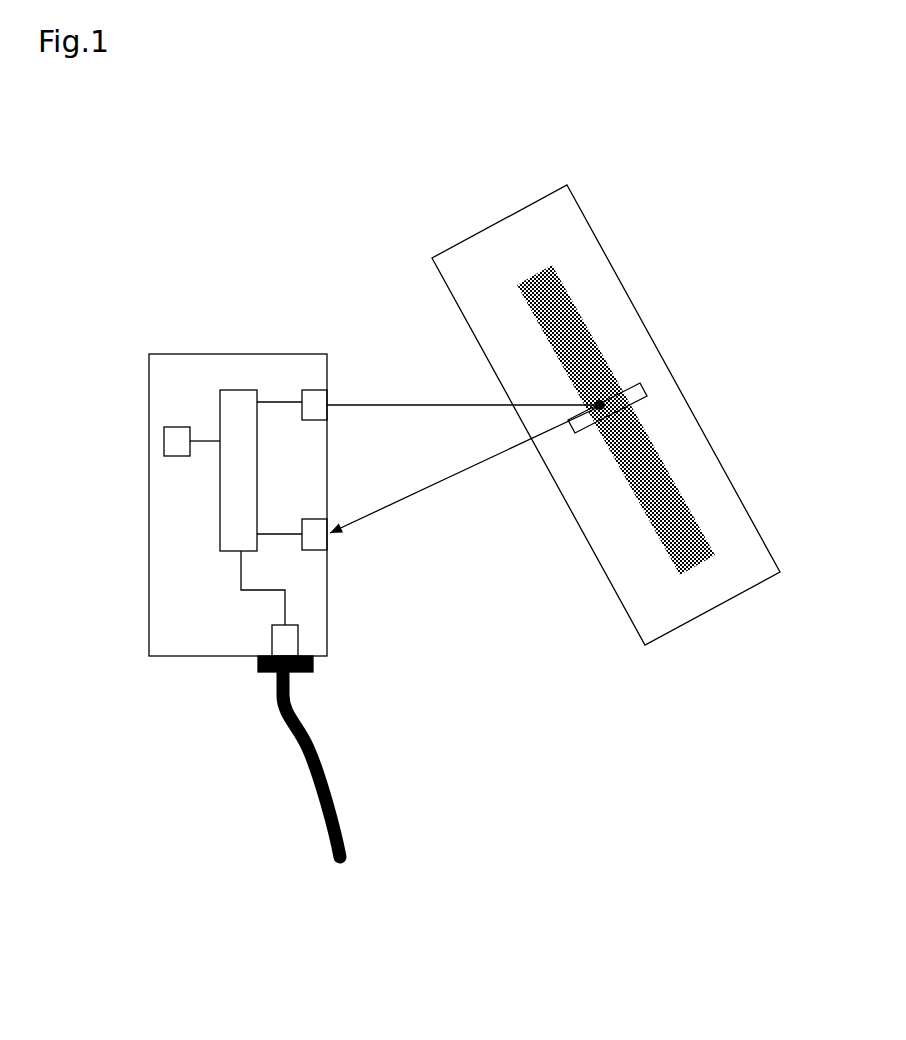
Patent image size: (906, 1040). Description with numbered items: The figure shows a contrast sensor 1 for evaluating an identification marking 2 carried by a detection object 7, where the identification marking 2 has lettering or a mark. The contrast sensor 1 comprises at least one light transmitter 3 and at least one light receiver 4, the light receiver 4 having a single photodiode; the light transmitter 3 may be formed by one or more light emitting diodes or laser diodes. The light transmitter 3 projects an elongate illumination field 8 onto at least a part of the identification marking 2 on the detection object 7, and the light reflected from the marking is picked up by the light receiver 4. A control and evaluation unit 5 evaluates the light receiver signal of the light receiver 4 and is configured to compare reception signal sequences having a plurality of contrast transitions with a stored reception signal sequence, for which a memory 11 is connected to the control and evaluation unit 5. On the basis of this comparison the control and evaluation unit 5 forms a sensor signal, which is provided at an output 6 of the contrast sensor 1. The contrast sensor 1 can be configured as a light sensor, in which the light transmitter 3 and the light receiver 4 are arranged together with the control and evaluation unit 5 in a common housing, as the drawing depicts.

The contrast sensor 1 is at (258, 300).
The identification marking 2 is at (601, 350).
The light transmitter 3 is at (322, 403).
The light receiver 4 is at (325, 540).
The control and evaluation unit 5 is at (245, 400).
The output 6 is at (277, 635).
The detection object 7 is at (602, 238).
The elongate illumination field 8 is at (637, 378).
The memory 11 is at (173, 443).